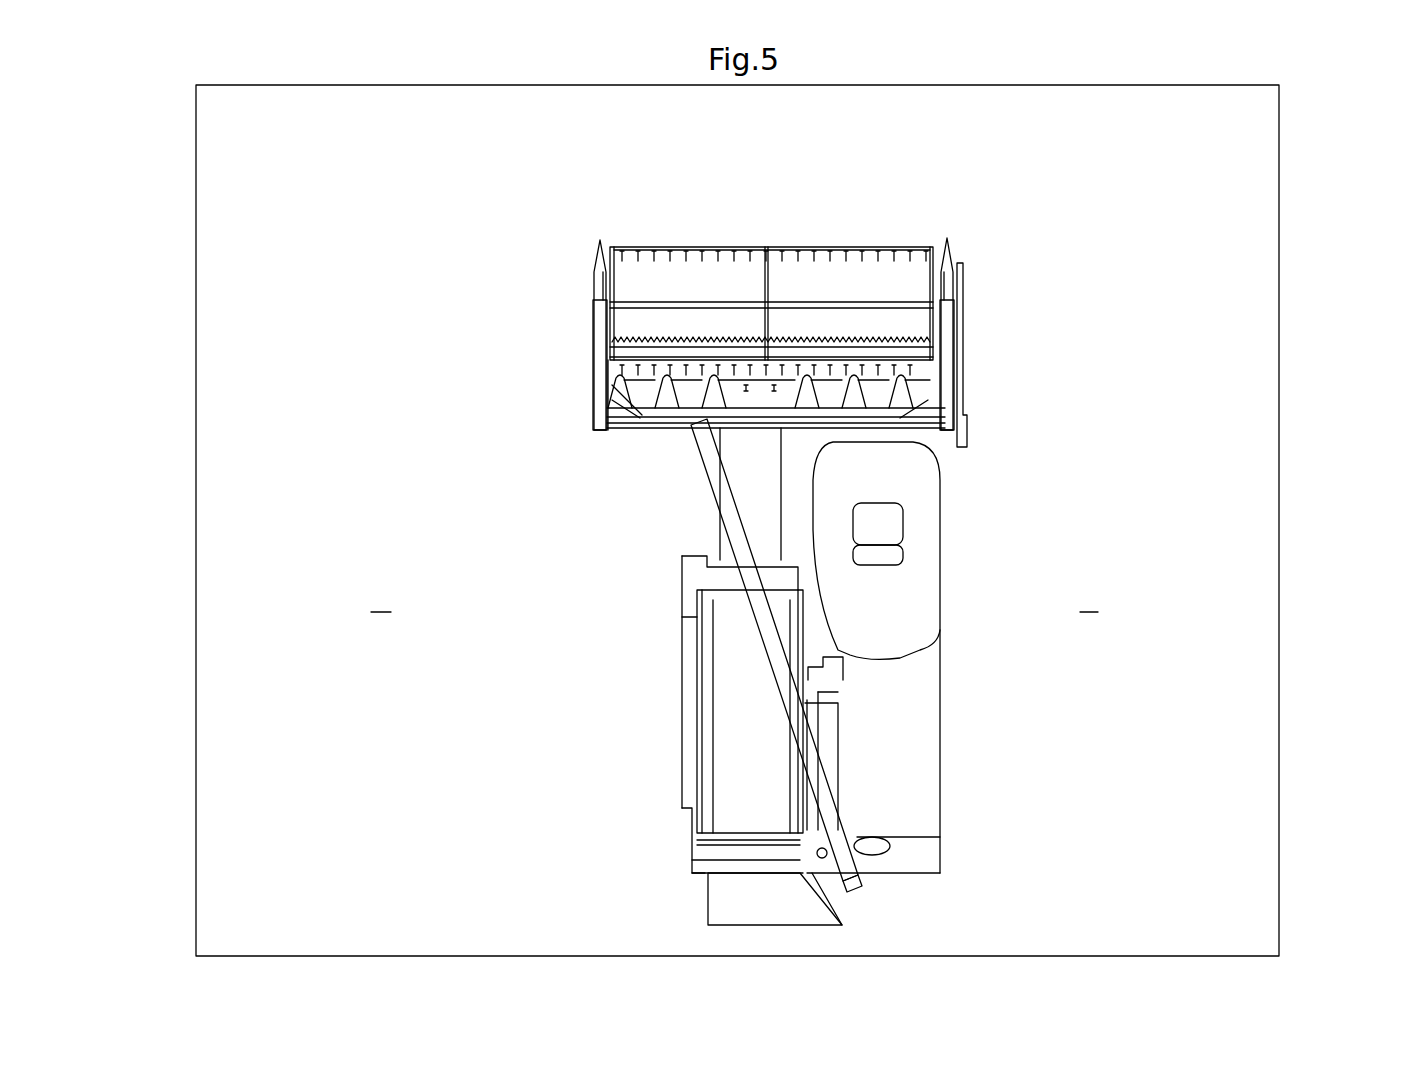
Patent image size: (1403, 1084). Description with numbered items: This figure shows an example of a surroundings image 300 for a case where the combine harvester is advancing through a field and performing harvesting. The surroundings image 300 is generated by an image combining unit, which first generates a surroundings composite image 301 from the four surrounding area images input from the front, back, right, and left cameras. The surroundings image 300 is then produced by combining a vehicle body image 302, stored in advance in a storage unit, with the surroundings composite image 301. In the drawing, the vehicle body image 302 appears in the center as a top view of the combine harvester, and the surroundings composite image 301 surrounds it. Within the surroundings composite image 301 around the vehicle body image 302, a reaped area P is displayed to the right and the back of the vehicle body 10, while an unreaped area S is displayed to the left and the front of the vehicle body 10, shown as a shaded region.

The surroundings image 300 is at (1280, 210).
The surroundings composite image 301 is at (1242, 618).
The vehicle body image 302 is at (593, 312).
The vehicle body 10 is at (900, 618).